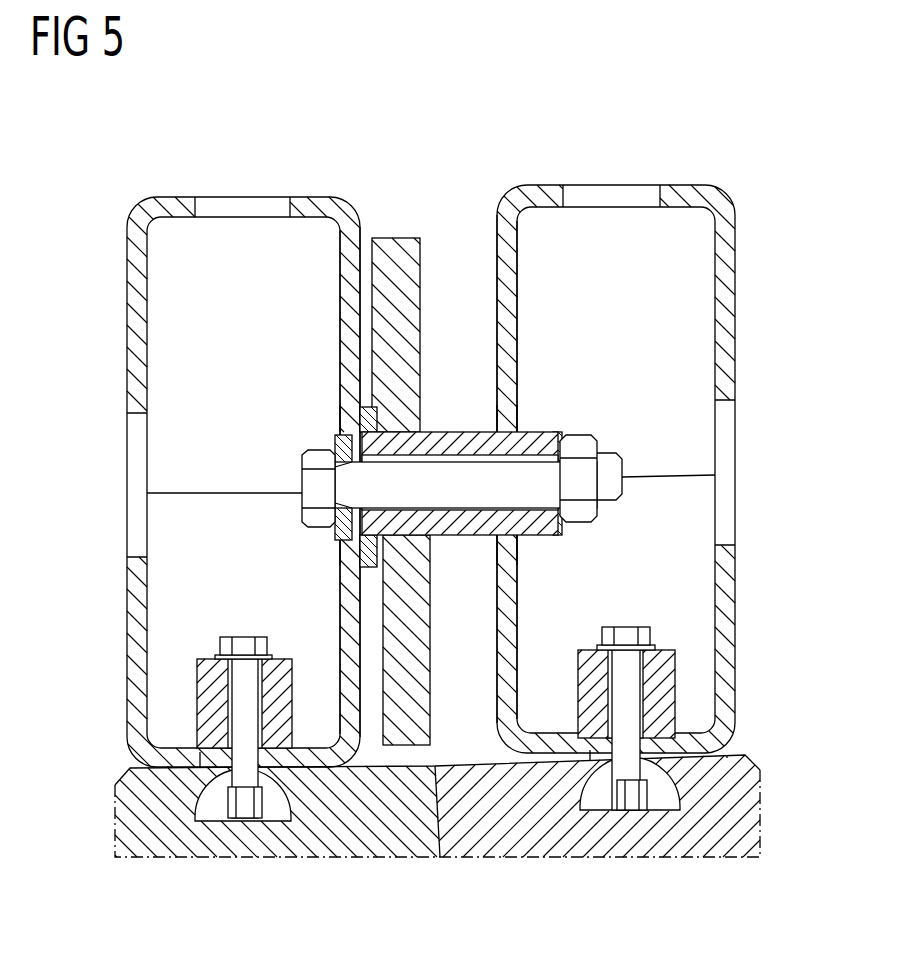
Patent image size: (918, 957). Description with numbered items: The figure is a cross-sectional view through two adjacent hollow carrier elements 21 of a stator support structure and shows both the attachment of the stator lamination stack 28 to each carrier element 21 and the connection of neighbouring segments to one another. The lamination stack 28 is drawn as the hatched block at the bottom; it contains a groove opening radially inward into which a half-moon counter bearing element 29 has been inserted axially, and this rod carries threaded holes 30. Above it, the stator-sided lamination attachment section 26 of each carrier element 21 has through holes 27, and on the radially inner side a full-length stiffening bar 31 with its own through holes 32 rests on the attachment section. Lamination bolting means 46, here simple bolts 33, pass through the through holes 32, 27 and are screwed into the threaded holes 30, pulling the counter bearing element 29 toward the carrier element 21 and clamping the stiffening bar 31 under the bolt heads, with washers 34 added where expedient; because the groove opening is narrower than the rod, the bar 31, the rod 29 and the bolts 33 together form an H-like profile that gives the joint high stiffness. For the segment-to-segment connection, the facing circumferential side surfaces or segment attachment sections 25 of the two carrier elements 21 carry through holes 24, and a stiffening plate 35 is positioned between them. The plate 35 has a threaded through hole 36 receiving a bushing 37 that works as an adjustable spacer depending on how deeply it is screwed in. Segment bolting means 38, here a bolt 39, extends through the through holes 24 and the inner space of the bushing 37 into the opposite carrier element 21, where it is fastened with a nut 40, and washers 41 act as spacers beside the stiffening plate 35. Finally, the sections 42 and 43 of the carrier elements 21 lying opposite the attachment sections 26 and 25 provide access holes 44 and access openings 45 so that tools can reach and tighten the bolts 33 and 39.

The carrier element 21 is at (431, 440).
The through holes 24 is at (345, 430).
The circumferential side surface / segment attachment section 25 is at (345, 318).
The lamination attachment section 26 is at (434, 839).
The through holes 27 is at (200, 755).
The lamination stack 28 is at (418, 840).
The counter bearing element 29 is at (280, 806).
The threaded holes 30 is at (215, 790).
The stiffening bar 31 is at (431, 697).
The through holes 32 is at (218, 731).
The bolt 33 is at (431, 737).
The washer 34 is at (210, 657).
The stiffening plate 35 is at (411, 240).
The through hole 36 is at (413, 432).
The bushing 37 is at (470, 525).
The segment bolting means 38 is at (337, 511).
The bolt 39 is at (317, 499).
The nut 40 is at (578, 512).
The washers 41 is at (337, 442).
The section 42 is at (170, 205).
The section 43 is at (722, 318).
The access holes 44 is at (240, 205).
The access openings 45 is at (137, 484).
The lamination bolting means 46 is at (200, 636).